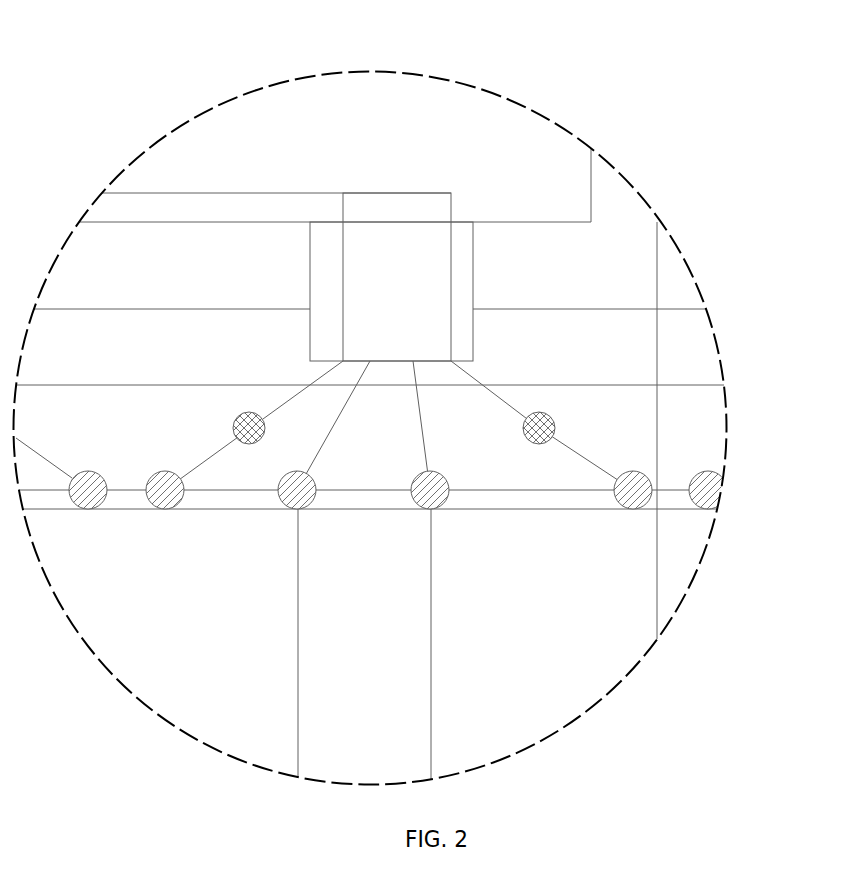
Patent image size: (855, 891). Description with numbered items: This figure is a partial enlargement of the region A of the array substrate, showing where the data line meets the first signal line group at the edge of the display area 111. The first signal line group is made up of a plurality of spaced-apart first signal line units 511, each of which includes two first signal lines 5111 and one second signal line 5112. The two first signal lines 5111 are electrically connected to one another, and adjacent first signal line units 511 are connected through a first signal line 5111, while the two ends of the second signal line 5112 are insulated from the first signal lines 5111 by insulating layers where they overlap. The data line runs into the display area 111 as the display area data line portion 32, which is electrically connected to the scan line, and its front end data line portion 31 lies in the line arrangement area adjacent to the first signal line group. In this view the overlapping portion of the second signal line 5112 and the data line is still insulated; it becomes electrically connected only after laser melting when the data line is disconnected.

The display area 111 is at (217, 690).
The first signal line unit 511 is at (757, 213).
The first signal line 5111 is at (292, 395).
The second signal line 5112 is at (518, 490).
The front end data line portion 31 is at (425, 447).
The display area data line portion 32 is at (432, 645).
The partial enlargement region A is at (467, 82).